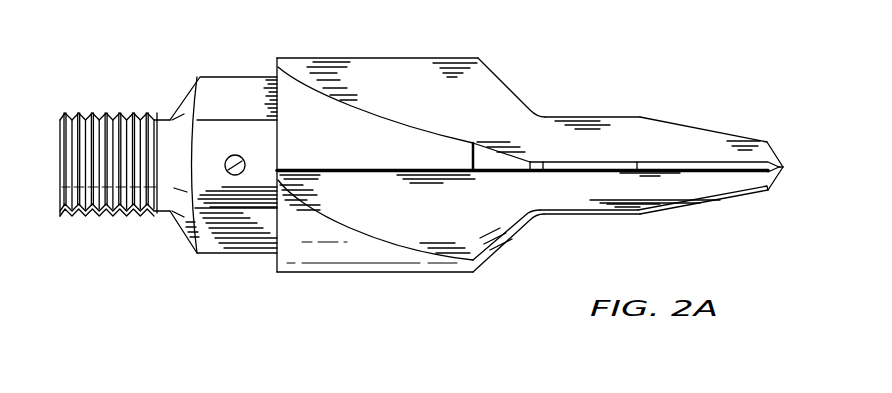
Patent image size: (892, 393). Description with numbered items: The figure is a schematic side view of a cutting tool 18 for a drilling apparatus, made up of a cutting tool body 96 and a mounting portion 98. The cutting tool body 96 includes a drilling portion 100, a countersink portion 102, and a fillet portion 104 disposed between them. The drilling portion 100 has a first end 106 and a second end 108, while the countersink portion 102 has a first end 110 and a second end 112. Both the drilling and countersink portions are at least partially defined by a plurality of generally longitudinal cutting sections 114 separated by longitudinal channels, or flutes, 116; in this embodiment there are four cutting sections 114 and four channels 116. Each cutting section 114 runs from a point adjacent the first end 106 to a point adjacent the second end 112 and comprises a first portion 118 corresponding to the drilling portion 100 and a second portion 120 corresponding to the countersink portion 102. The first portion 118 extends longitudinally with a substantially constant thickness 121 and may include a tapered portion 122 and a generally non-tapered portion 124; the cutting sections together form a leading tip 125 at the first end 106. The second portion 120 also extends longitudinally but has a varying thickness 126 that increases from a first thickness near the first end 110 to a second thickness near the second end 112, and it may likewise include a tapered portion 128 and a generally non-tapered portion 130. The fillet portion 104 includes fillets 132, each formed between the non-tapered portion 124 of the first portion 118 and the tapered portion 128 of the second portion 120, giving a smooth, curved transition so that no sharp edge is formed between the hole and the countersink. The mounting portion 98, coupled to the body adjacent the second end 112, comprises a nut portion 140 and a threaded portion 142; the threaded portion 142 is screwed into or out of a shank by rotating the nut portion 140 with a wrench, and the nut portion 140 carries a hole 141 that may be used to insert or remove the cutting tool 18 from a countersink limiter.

The cutting tool 18 is at (644, 54).
The cutting tool body 96 is at (512, 261).
The mounting portion 98 is at (154, 231).
The drilling portion 100 is at (700, 190).
The countersink portion 102 is at (322, 255).
The fillet portion 104 is at (540, 127).
The first end 106 is at (745, 179).
The second end 108 is at (552, 179).
The first end 110 is at (506, 109).
The second end 112 is at (285, 63).
The cutting section 114 is at (353, 70).
The longitudinal channel 116 is at (386, 101).
The first portion 118 is at (660, 132).
The second portion 120 is at (422, 68).
The thickness 121 is at (598, 196).
The tapered portion 122 is at (713, 165).
The non-tapered portion 124 is at (580, 162).
The leading tip 125 is at (768, 142).
The thickness 126 is at (385, 123).
The tapered portion 128 is at (483, 72).
The non-tapered portion 130 is at (292, 135).
The fillet 132 is at (538, 111).
The nut portion 140 is at (213, 88).
The hole 141 is at (232, 177).
The threaded portion 142 is at (105, 117).